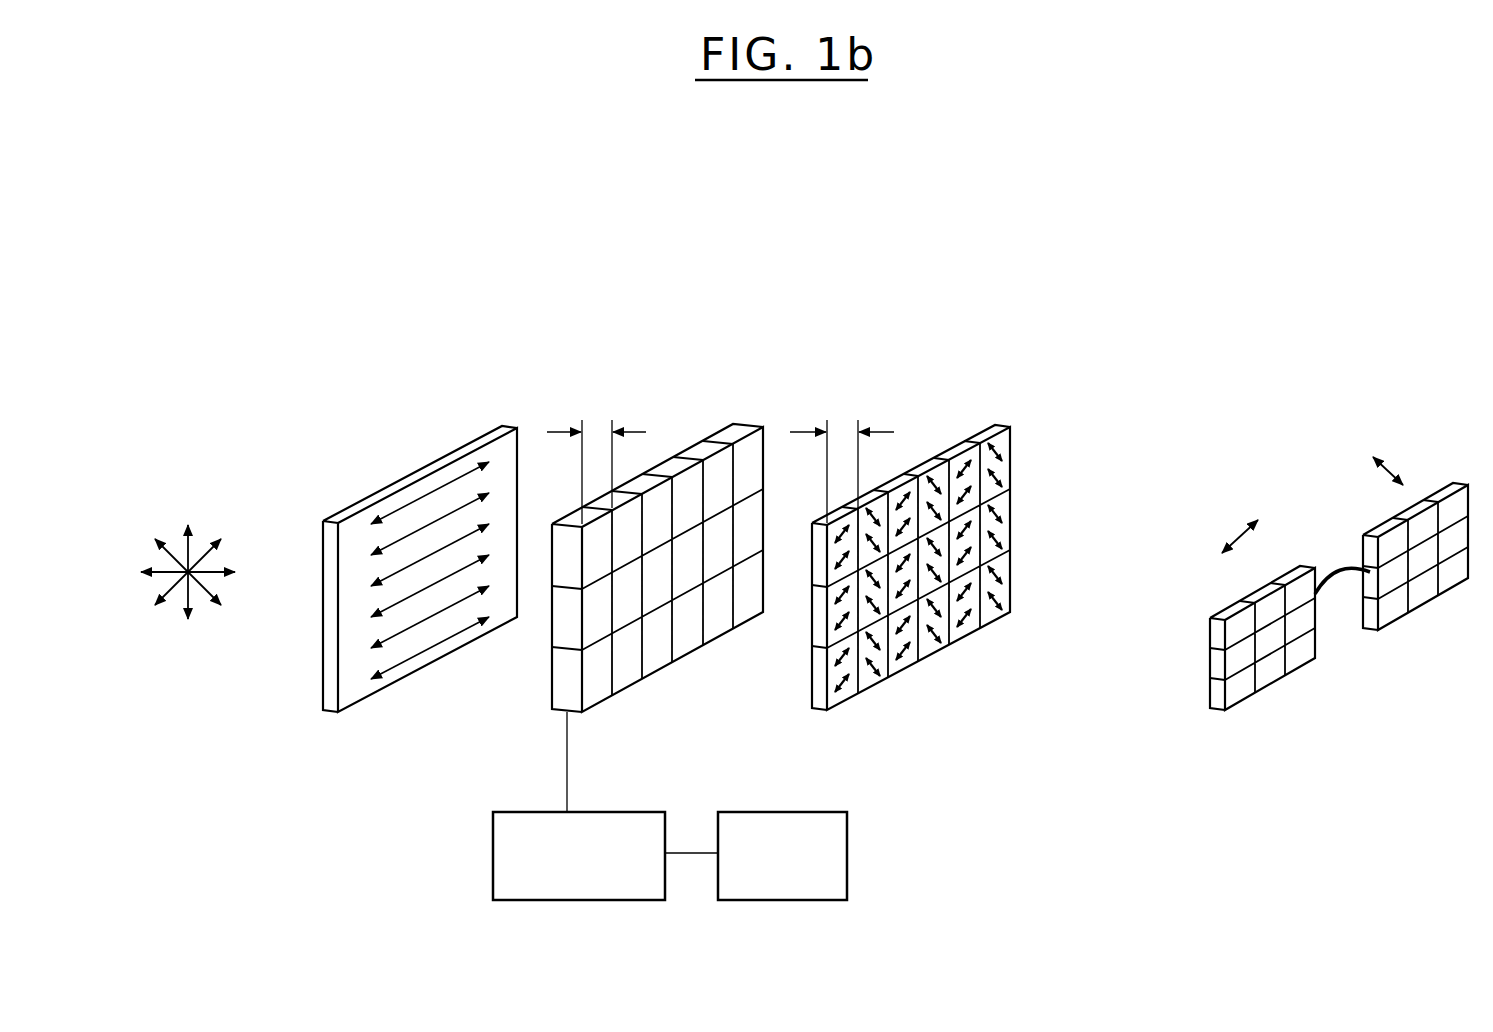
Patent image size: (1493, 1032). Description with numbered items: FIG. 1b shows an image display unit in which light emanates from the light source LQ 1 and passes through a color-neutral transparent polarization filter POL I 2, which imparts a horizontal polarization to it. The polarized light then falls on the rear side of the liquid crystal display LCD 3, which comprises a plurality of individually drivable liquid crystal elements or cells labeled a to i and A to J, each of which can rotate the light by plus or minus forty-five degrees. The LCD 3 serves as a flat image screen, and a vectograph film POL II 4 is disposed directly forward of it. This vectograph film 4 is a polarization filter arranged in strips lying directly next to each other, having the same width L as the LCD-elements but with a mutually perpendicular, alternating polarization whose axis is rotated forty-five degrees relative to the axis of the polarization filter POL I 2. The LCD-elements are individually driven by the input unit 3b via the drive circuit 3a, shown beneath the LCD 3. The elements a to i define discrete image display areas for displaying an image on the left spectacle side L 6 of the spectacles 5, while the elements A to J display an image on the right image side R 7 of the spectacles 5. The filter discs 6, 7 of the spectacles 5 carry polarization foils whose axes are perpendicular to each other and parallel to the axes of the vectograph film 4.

The light source LQ 1 is at (188, 385).
The polarization filter POL I 2 is at (420, 432).
The liquid crystal display LCD 3 is at (655, 482).
The vectograph film POL II 4 is at (900, 431).
The spectacles 5 is at (1331, 432).
The left spectacle side L 6 is at (1262, 460).
The right image side R 7 is at (1415, 420).
The drive circuit 3a is at (493, 858).
The input unit 3b is at (830, 870).